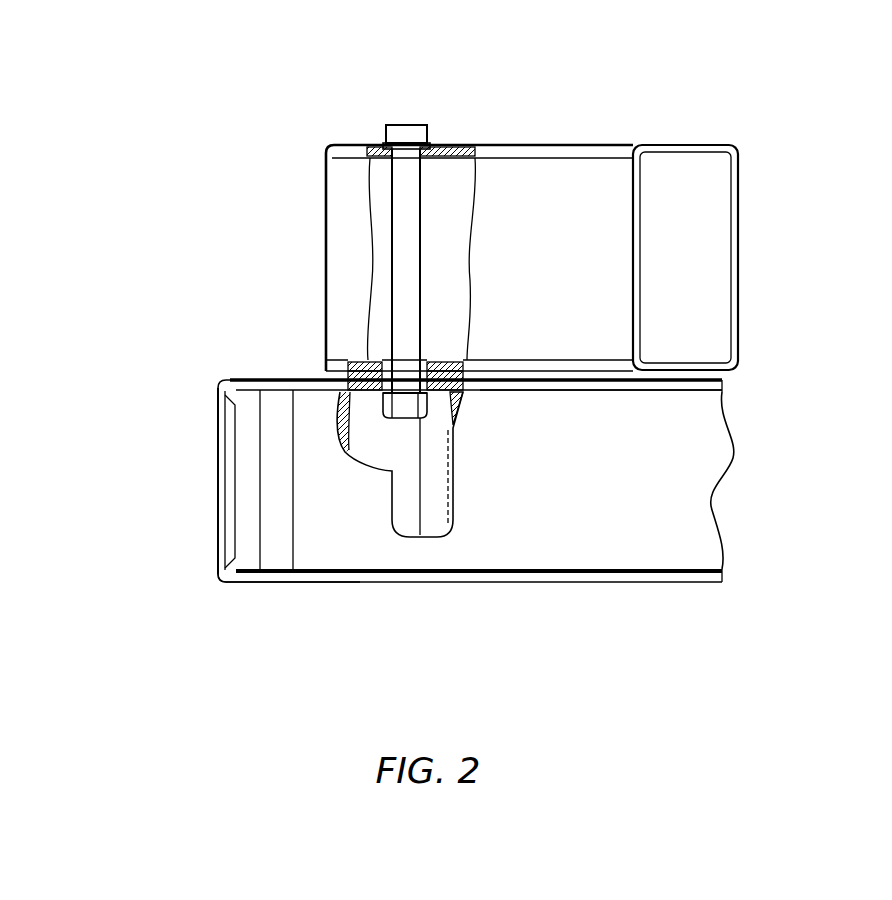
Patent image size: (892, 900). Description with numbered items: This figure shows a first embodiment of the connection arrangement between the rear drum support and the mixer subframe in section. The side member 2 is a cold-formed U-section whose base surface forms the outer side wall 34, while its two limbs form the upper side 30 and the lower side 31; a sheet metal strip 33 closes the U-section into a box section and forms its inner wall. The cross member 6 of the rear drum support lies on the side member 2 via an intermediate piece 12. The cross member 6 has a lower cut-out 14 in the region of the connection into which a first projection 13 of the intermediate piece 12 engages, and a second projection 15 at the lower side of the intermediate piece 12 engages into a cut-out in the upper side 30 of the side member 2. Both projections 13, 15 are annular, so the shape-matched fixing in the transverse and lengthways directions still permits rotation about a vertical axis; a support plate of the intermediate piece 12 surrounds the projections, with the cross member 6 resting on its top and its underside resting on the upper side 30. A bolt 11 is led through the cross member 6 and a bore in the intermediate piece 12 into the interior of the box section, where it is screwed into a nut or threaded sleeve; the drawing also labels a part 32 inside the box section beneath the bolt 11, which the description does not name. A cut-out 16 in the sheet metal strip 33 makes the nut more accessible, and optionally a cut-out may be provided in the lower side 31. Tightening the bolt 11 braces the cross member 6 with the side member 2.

The side member 2 is at (228, 581).
The cross member 6 is at (570, 198).
The bolt 11 is at (408, 133).
The intermediate piece 12 is at (425, 362).
The first projection 13 is at (366, 372).
The lower cut-out 14 is at (373, 362).
The second projection 15 is at (390, 396).
The cut-out 16 is at (447, 502).
The upper side 30 is at (281, 375).
The lower side 31 is at (298, 584).
The cup 32 is at (435, 473).
The sheet metal strip 33 is at (588, 503).
The outer side wall 34 is at (216, 453).